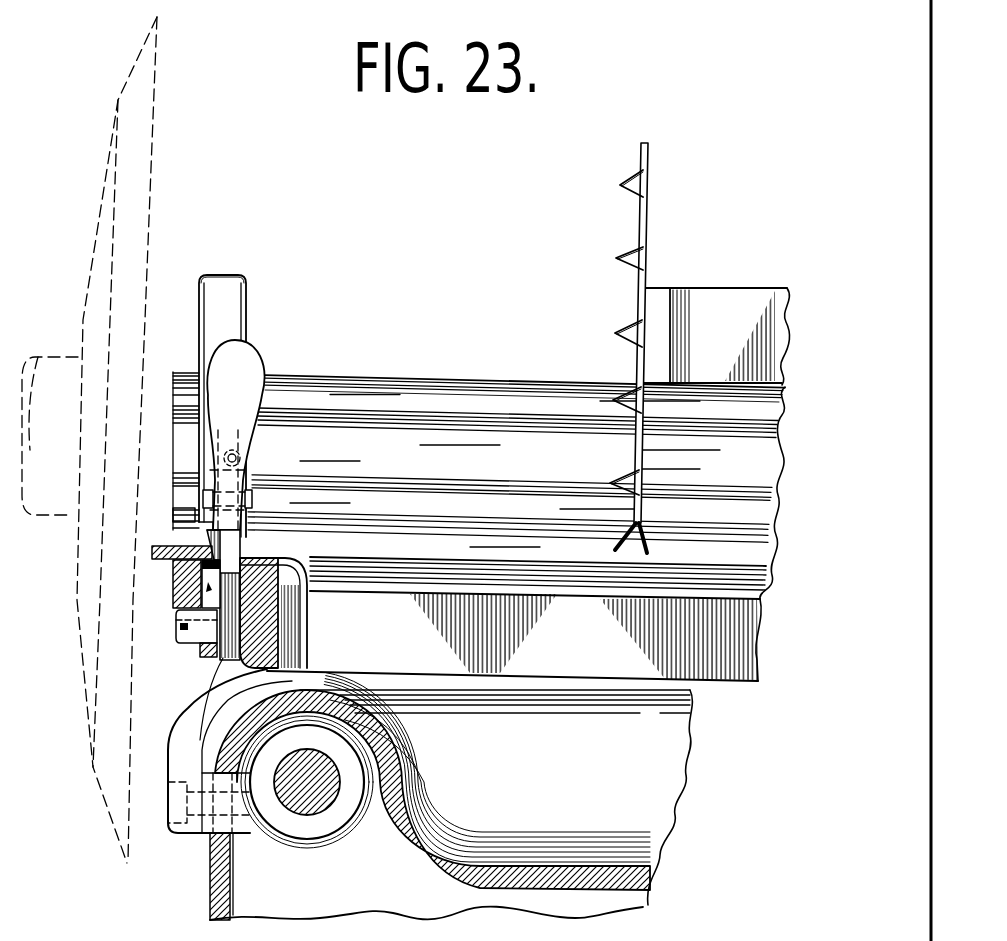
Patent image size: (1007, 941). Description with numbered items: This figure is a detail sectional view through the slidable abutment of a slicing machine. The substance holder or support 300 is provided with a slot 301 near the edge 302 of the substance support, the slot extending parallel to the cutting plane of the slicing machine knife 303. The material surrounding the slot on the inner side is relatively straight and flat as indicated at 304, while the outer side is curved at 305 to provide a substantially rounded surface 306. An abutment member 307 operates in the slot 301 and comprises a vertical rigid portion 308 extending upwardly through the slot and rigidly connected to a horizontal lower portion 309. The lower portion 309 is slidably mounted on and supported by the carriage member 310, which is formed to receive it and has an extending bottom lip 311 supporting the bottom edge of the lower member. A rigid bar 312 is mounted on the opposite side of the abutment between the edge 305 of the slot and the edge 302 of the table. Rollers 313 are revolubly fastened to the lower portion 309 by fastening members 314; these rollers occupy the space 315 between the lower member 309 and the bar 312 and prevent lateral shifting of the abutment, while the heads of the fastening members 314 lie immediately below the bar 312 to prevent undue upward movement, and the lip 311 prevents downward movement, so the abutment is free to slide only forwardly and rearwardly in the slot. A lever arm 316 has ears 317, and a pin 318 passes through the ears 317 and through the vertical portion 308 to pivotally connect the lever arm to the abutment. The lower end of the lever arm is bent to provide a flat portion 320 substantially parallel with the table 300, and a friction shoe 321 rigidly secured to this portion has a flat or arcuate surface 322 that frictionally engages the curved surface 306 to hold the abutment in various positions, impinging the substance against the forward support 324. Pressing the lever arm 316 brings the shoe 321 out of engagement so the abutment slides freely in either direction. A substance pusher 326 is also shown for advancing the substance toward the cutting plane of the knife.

The substance holder or support 300 is at (390, 393).
The slot 301 is at (241, 547).
The edge of the substance support 302 is at (173, 562).
The slicing machine knife 303 is at (142, 233).
The straight flat material surrounding the slot 304 is at (248, 563).
The curved outer side of the slot 305 is at (182, 628).
The rounded surface 306 is at (208, 532).
The abutment member 307 is at (243, 318).
The vertical rigid portion 308 is at (237, 283).
The horizontal lower portion 309 is at (227, 575).
The carriage member 310 is at (205, 707).
The bottom lip 311 is at (230, 677).
The rigid bar 312 is at (205, 580).
The rollers 313 is at (221, 660).
The fastening members 314 is at (200, 645).
The space 315 is at (228, 598).
The lever arm 316 is at (253, 368).
The ears 317 is at (218, 482).
The pin 318 is at (254, 502).
The flat portion 320 is at (200, 517).
The friction shoe 321 is at (248, 530).
The flat or arcuate surface 322 is at (152, 549).
The forward support 324 is at (513, 395).
The substance pusher 326 is at (645, 184).